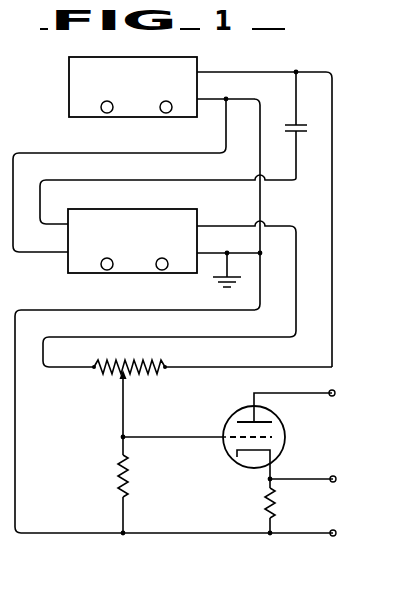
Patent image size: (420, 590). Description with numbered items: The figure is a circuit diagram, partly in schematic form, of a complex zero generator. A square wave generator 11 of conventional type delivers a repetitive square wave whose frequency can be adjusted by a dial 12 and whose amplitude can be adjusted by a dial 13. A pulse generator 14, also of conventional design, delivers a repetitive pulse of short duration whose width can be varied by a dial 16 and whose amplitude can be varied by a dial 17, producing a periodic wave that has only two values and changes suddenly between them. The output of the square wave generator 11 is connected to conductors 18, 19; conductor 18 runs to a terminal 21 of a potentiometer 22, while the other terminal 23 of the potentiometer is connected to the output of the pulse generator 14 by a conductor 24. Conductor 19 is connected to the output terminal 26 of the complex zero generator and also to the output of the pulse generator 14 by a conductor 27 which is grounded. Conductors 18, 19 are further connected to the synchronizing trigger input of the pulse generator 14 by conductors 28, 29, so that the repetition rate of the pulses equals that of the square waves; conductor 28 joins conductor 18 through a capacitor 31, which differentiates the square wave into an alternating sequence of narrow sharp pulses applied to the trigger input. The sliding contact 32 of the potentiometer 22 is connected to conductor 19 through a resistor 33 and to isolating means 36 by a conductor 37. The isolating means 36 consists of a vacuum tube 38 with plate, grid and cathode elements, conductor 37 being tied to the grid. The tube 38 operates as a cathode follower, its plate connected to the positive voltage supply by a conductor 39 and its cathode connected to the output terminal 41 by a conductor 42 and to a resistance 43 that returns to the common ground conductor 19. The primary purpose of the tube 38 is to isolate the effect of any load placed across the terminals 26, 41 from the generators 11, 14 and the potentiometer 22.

The square wave generator 11 is at (181, 57).
The dial 12 is at (101, 115).
The dial 13 is at (164, 114).
The pulse generator 14 is at (183, 209).
The dial 16 is at (101, 271).
The dial 17 is at (159, 271).
The conductor 18 is at (236, 71).
The conductor 19 is at (212, 107).
The terminal 21 is at (163, 373).
The potentiometer 22 is at (135, 356).
The terminal 23 is at (92, 370).
The conductor 24 is at (257, 339).
The output terminal 26 is at (340, 534).
The conductor 27 is at (207, 251).
The conductor 28 is at (133, 182).
The conductor 29 is at (46, 151).
The capacitor 31 is at (298, 121).
The sliding contact 32 is at (124, 423).
The resistor 33 is at (129, 491).
The isolating means 36 is at (291, 458).
The conductor 37 is at (150, 440).
The vacuum tube 38 is at (246, 467).
The conductor 39 is at (296, 396).
The output terminal 41 is at (340, 480).
The conductor 42 is at (304, 486).
The resistance 43 is at (262, 512).